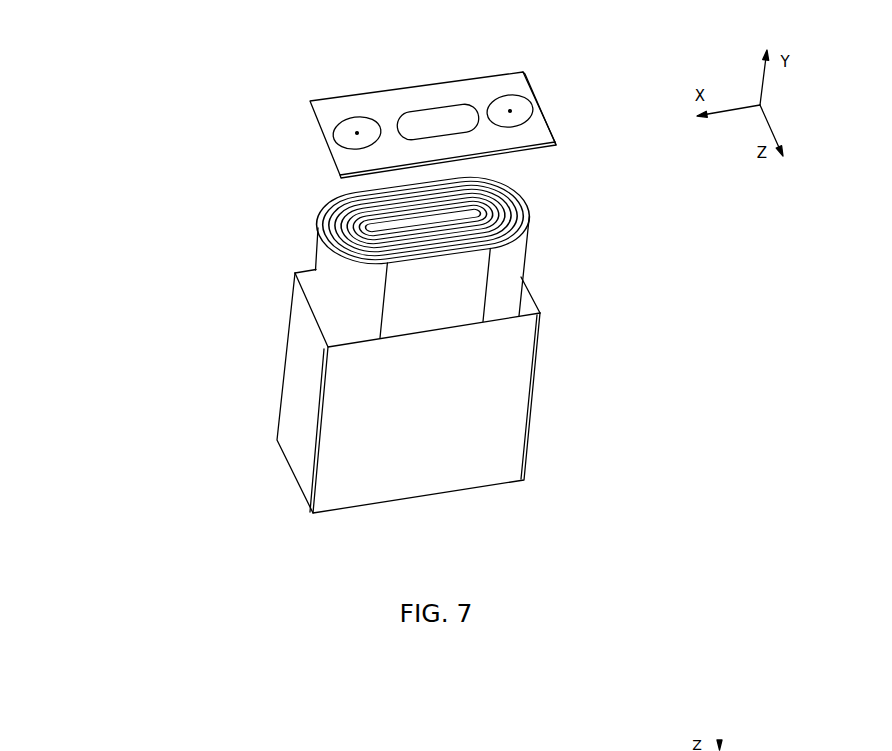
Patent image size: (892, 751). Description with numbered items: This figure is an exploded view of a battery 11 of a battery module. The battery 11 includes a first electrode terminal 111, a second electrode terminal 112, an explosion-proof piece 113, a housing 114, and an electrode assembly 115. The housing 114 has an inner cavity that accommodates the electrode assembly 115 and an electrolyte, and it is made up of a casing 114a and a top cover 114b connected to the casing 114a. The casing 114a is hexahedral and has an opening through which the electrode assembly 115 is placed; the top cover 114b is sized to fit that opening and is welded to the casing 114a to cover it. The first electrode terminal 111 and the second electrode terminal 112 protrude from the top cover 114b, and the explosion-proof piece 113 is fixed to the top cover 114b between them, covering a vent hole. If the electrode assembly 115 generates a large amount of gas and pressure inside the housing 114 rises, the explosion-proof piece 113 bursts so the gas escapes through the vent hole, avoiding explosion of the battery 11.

The battery 11 is at (379, 268).
The first electrode terminal 111 is at (356, 122).
The second electrode terminal 112 is at (508, 100).
The explosion-proof piece 113 is at (436, 117).
The housing 114 is at (484, 268).
The casing 114a is at (523, 340).
The top cover 114b is at (474, 116).
The electrode assembly 115 is at (322, 258).